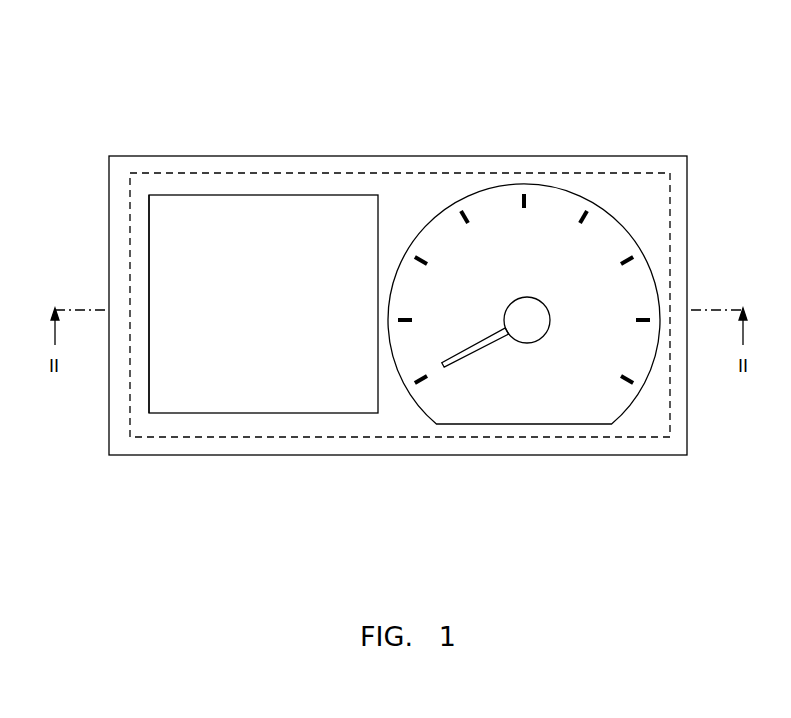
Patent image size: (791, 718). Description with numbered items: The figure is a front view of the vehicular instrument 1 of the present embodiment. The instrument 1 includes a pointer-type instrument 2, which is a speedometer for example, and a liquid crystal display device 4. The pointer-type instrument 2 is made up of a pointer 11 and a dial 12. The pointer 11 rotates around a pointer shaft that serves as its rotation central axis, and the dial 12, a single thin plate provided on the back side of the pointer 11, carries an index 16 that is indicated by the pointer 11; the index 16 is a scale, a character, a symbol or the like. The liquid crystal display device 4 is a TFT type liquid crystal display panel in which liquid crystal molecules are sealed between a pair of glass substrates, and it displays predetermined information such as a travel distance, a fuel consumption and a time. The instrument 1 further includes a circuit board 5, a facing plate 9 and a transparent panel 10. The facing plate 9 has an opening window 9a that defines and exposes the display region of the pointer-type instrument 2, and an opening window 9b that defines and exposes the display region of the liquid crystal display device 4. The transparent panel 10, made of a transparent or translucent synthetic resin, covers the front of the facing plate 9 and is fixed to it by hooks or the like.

The vehicular instrument 1 is at (618, 90).
The pointer-type instrument 2 is at (640, 243).
The liquid crystal display device 4 is at (149, 242).
The circuit board 5 is at (158, 437).
The facing plate 9 is at (410, 192).
The opening window 9a is at (556, 196).
The opening window 9b is at (214, 206).
The transparent panel 10 is at (640, 156).
The pointer 11 is at (462, 365).
The dial 12 is at (645, 292).
The index 16 is at (643, 326).